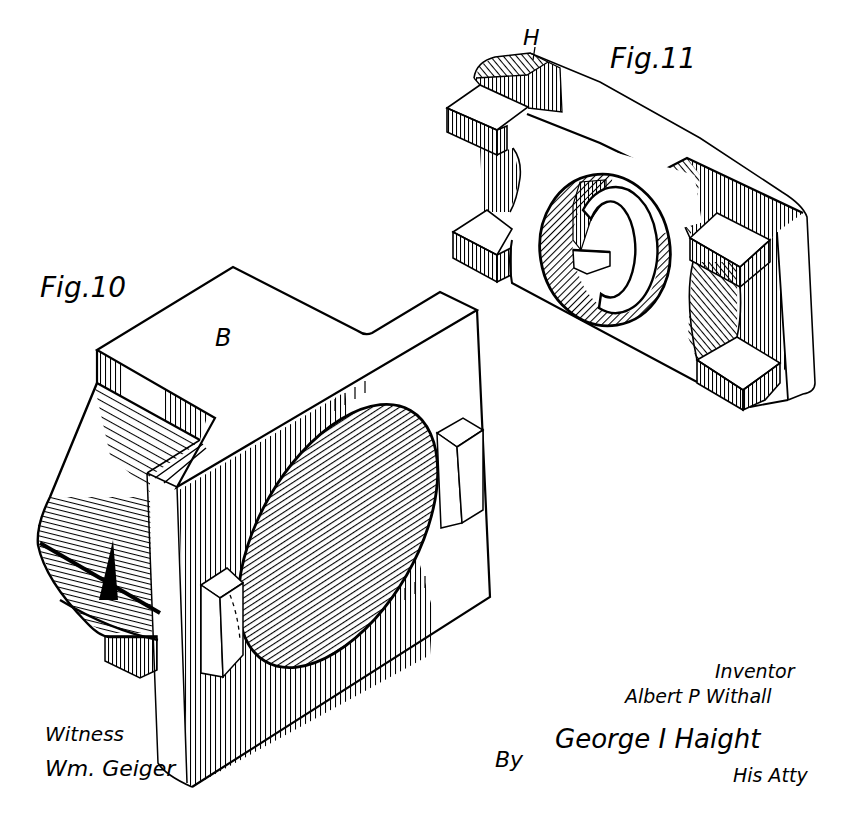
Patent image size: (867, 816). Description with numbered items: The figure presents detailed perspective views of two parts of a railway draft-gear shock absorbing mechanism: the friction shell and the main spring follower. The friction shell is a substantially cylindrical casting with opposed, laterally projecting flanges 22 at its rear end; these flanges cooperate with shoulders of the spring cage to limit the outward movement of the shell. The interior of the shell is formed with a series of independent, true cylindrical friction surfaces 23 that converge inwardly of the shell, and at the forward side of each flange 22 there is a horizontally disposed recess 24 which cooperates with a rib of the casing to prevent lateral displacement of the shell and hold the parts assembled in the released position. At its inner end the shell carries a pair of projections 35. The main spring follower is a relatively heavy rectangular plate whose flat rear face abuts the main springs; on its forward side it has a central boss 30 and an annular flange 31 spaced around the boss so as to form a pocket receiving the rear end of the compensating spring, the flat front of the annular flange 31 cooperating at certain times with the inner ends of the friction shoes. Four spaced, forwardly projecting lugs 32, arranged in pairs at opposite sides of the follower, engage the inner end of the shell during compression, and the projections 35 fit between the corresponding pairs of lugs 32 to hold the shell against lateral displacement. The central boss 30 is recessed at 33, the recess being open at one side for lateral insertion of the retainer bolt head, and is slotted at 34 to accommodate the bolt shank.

In FIG. 10, the flanges 22 is at (152, 498).
In FIG. 10, the cylindrical friction surfaces 23 is at (266, 566).
In FIG. 10, the recess 24 is at (133, 648).
In FIG. 10, the projections 35 is at (481, 457).
In FIG. 11, the central boss 30 is at (620, 288).
In FIG. 11, the annular flange 31 is at (718, 153).
In FIG. 11, the lugs 32 is at (463, 136).
In FIG. 11, the recess 33 is at (631, 300).
In FIG. 11, the slot 34 is at (577, 253).